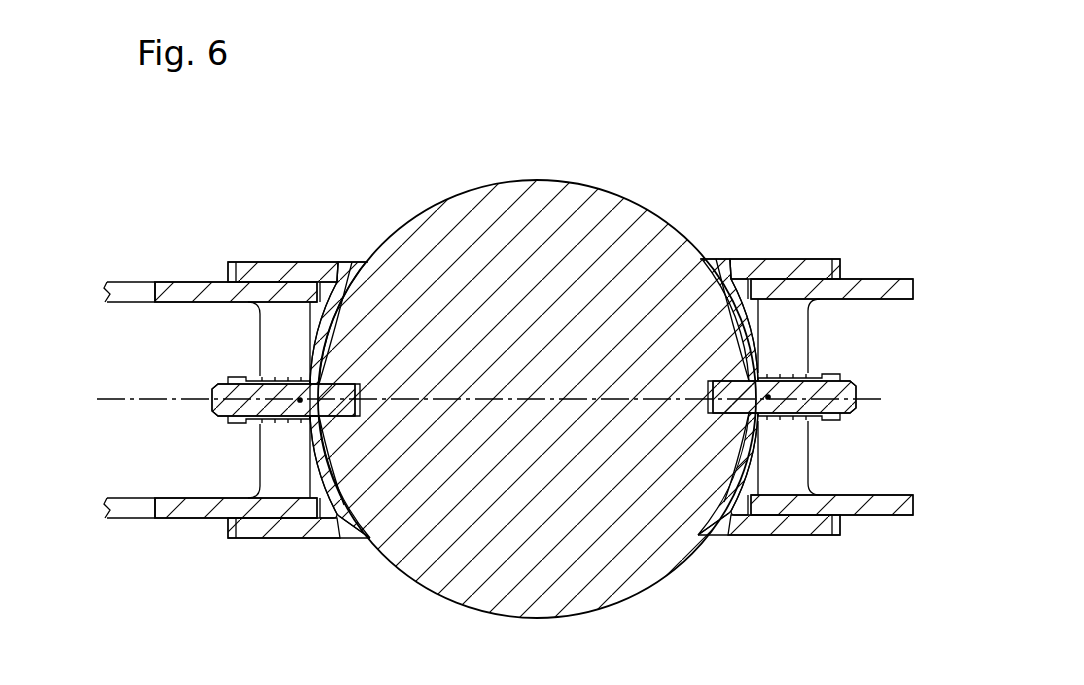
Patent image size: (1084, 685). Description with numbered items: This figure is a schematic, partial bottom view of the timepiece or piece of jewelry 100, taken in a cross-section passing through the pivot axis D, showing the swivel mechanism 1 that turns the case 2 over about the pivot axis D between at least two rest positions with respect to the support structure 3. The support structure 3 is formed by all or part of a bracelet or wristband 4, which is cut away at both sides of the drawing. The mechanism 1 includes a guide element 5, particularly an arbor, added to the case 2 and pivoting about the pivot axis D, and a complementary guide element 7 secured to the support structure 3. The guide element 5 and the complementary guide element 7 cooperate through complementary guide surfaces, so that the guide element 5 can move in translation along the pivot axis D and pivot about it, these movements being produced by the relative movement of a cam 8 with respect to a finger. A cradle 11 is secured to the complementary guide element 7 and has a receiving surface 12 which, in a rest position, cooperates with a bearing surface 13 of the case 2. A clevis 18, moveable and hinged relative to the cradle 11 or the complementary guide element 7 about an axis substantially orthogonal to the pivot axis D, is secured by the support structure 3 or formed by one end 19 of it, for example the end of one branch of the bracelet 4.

The swivel mechanism 1 is at (361, 224).
The case 2 is at (522, 207).
The support structure 3 is at (149, 270).
The bracelet or wristband 4 is at (125, 292).
The guide element 5 is at (250, 422).
The complementary guide element 7 is at (310, 456).
The cam 8 is at (258, 375).
The cradle 11 is at (274, 272).
The receiving surface 12 is at (344, 330).
The bearing surface 13 is at (355, 536).
The clevis 18 is at (202, 292).
The end 19 is at (156, 274).
The timepiece or piece of jewelry 100 is at (718, 193).
The pivot axis D is at (115, 404).